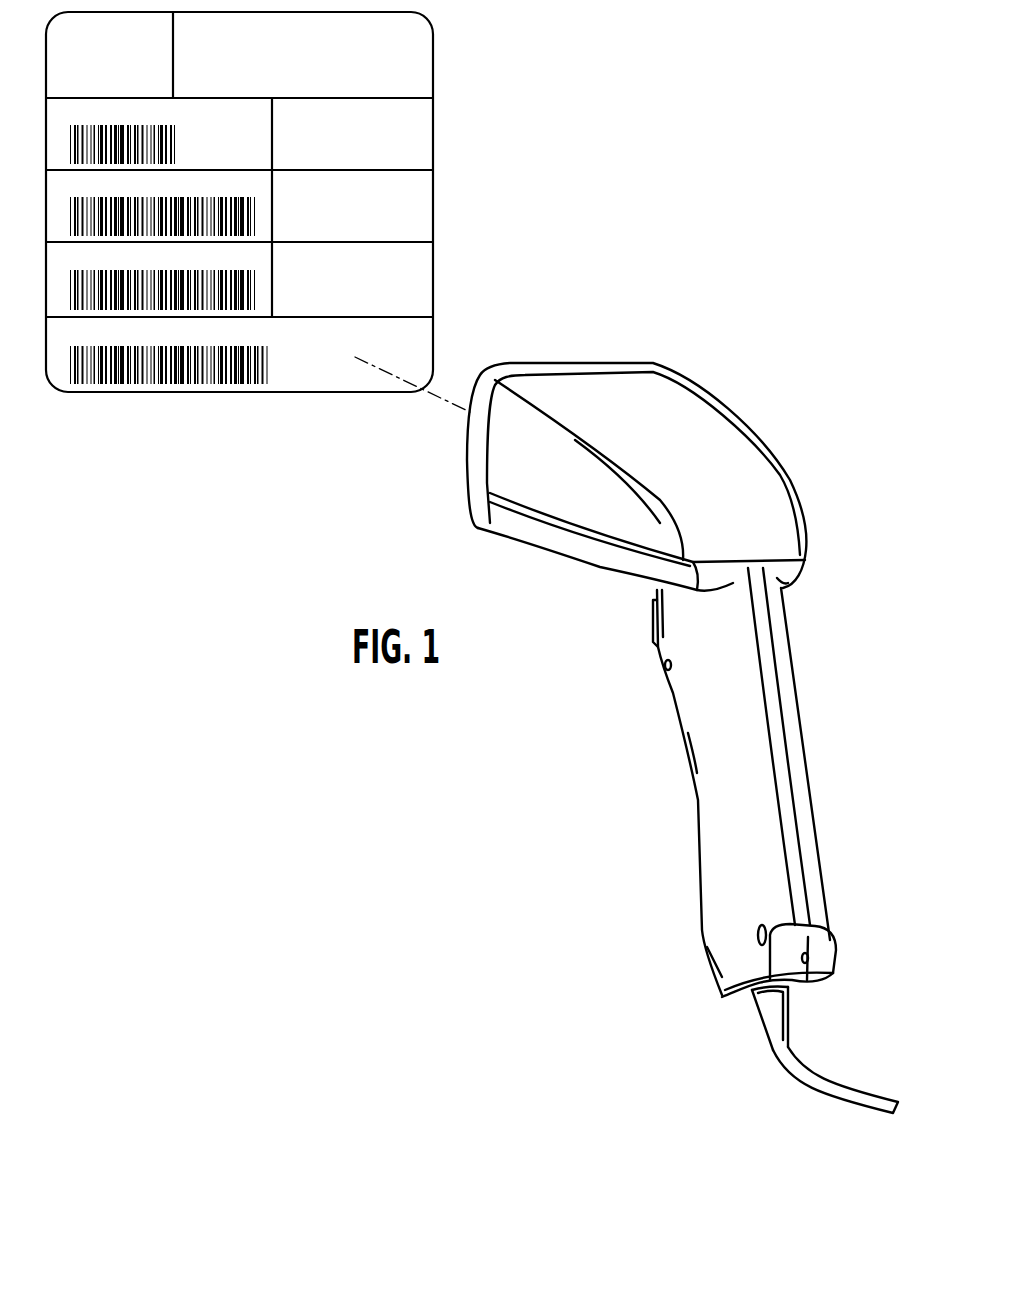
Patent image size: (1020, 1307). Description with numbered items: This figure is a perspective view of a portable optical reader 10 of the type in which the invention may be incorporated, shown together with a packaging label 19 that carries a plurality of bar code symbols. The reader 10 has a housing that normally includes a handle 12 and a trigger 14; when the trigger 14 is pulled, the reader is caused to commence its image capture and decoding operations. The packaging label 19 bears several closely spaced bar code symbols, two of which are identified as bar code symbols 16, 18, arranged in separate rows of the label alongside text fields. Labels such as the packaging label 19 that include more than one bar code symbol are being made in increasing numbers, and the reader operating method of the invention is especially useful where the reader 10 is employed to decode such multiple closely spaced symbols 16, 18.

The portable optical reader 10 is at (682, 738).
The handle 12 is at (800, 733).
The trigger 14 is at (653, 620).
The bar code symbol 16 is at (68, 147).
The bar code symbol 18 is at (68, 217).
The packaging label 19 is at (254, 202).